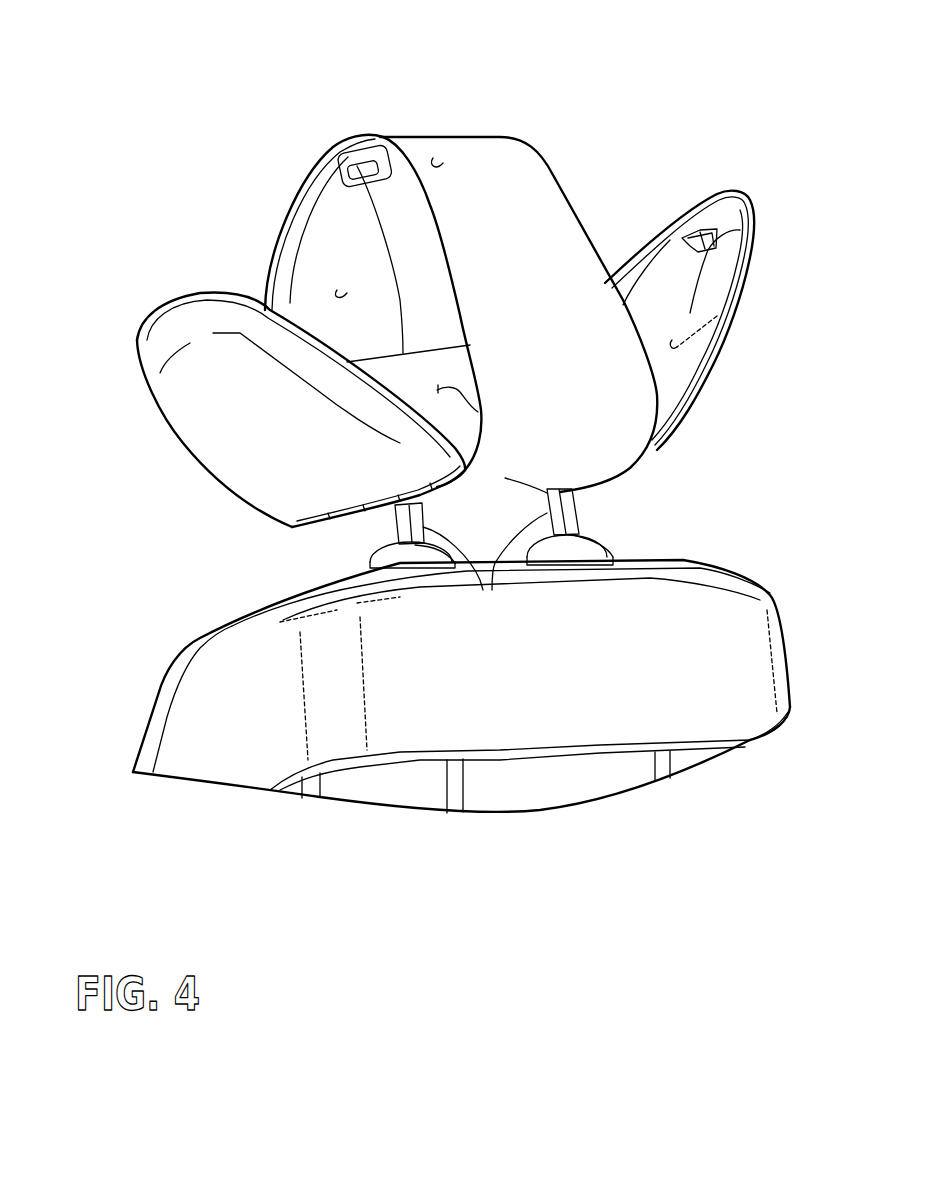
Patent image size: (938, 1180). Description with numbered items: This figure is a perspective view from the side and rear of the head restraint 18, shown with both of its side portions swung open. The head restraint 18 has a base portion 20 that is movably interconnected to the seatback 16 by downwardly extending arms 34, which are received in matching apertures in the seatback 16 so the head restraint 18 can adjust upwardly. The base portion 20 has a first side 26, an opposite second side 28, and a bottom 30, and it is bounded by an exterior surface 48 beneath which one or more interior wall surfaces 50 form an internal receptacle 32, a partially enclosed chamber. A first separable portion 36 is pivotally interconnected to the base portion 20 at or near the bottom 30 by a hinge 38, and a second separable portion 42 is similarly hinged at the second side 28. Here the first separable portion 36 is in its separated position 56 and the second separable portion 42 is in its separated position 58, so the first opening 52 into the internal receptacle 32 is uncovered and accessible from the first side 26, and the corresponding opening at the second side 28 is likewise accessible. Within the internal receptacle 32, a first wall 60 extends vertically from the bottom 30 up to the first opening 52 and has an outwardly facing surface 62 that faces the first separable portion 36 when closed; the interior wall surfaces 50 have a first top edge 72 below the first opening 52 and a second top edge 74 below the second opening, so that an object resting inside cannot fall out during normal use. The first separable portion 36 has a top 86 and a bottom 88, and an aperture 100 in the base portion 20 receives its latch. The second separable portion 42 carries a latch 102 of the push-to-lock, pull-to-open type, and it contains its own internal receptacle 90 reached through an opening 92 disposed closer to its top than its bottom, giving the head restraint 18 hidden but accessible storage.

The seatback 16 is at (593, 653).
The head restraint 18 is at (466, 134).
The base portion 20 is at (478, 412).
The first side 26 is at (387, 377).
The second side 28 is at (628, 318).
The bottom 30 is at (422, 512).
The internal receptacle 32 is at (363, 213).
The downwardly extending arms 34 is at (490, 565).
The first separable portion 36 is at (240, 435).
The hinge 38 is at (385, 513).
The second separable portion 42 is at (728, 218).
The exterior surface 48 is at (433, 158).
The interior wall surfaces 50 is at (405, 450).
The first opening 52 is at (333, 187).
The separated position 56 is at (130, 340).
The separated position 58 is at (730, 347).
The first wall 60 is at (453, 420).
The outwardly facing surface 62 is at (557, 385).
The first top edge 72 is at (337, 290).
The second top edge 74 is at (640, 318).
The top 86 is at (163, 315).
The bottom 88 is at (368, 516).
The internal receptacle 90 is at (635, 322).
The opening 92 is at (667, 278).
The aperture 100 is at (362, 158).
The latch 102 is at (686, 234).